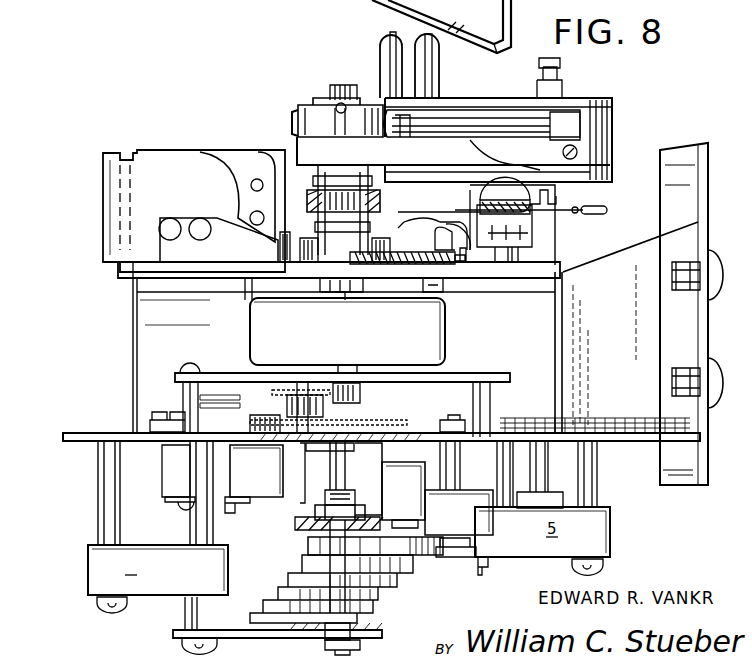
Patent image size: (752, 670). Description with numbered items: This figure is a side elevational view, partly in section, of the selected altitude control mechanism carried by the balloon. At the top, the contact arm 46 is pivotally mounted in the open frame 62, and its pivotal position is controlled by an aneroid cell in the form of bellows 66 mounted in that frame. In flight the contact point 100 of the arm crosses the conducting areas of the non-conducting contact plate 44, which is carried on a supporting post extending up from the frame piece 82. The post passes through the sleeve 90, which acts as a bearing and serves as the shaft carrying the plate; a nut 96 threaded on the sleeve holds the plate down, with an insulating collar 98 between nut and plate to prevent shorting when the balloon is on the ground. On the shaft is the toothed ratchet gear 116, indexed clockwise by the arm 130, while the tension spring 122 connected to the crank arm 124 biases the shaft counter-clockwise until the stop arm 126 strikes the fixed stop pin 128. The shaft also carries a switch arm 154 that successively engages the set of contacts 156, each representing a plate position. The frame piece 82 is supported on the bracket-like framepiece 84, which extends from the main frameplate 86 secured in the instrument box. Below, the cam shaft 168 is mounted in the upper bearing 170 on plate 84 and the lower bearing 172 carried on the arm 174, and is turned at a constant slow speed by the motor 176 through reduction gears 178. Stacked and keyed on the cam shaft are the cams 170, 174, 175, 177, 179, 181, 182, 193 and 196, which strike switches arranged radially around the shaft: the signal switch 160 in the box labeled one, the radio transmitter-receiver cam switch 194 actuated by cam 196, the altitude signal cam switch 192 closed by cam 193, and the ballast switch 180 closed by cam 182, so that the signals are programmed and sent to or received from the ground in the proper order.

The open frame 62 is at (606, 103).
The contact arm 46 is at (445, 130).
The contact point 100 is at (403, 130).
The non-conducting contact plate 44 is at (520, 162).
The bellows 66 is at (420, 58).
The nut 96 is at (311, 110).
The insulating collar 98 is at (298, 128).
The sleeve (shaft) 90 is at (312, 180).
The frame piece 82 is at (236, 274).
The indexing arm 130 is at (252, 290).
The toothed ratchet gear 116 is at (248, 180).
The switch arm 154 is at (437, 208).
The set of contacts 156 is at (424, 214).
The stop arm 126 is at (408, 246).
The fixed stop pin 128 is at (540, 232).
The tension spring 122 is at (446, 290).
The crank arm 124 is at (330, 294).
The constant speed motor 176 is at (447, 338).
The reduction gears 178 is at (322, 410).
The bracket-like framepiece (plate) 84 is at (655, 440).
The main frameplate 86 is at (705, 330).
The radio transmitter-receiver cam switch 194 is at (172, 485).
The signal switch 160 is at (166, 590).
The cam 196 is at (254, 479).
The upper bearing (cam) 170 is at (328, 460).
The cam shaft 168 is at (372, 495).
The altitude signal cam switch 192 is at (370, 496).
The ballast switch 180 is at (489, 486).
The cam 182 is at (448, 548).
The cam 193 is at (308, 525).
The cam (switch) 181 is at (308, 552).
The cam 179 is at (302, 568).
The cam 175 is at (395, 600).
The cam 177 is at (440, 590).
The lower bearing arm (cam) 174 is at (372, 608).
The lower bearing 172 is at (350, 630).